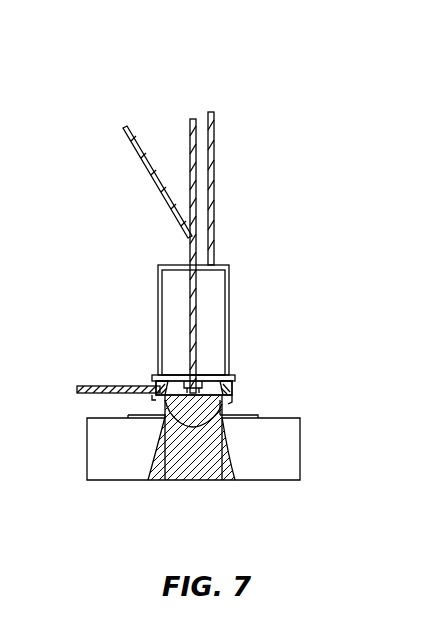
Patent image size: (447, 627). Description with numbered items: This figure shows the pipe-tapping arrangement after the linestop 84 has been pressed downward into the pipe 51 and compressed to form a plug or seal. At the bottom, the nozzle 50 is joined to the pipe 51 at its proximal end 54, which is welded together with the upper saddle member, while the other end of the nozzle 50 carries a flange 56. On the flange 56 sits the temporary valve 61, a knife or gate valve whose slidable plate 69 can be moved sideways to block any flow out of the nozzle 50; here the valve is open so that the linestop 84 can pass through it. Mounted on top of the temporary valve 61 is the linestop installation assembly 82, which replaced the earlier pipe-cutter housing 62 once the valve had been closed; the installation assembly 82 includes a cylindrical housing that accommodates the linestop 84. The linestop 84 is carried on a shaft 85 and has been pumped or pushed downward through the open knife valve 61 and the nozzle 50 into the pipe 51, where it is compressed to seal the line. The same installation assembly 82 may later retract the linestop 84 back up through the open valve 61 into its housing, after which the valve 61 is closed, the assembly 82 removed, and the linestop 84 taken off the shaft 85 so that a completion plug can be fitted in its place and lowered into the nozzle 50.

The nozzle 50 is at (231, 410).
The pipe 51 is at (108, 480).
The proximal end of the nozzle 54 is at (222, 437).
The flange 56 is at (153, 396).
The temporary valve 61 is at (151, 372).
The pipe-cutter housing 62 is at (229, 323).
The slidable plate 69 is at (92, 386).
The linestop installation assembly 82 is at (221, 253).
The linestop 84 is at (213, 465).
The shaft 85 is at (190, 303).